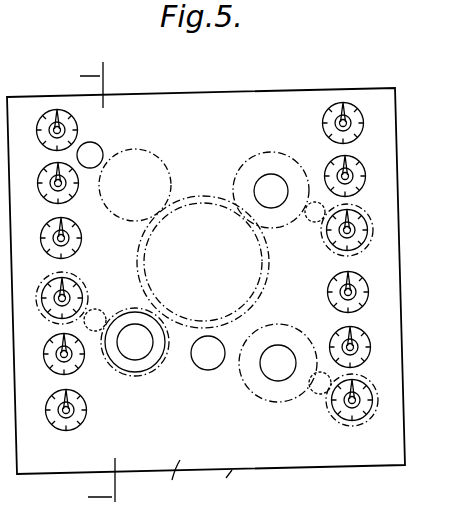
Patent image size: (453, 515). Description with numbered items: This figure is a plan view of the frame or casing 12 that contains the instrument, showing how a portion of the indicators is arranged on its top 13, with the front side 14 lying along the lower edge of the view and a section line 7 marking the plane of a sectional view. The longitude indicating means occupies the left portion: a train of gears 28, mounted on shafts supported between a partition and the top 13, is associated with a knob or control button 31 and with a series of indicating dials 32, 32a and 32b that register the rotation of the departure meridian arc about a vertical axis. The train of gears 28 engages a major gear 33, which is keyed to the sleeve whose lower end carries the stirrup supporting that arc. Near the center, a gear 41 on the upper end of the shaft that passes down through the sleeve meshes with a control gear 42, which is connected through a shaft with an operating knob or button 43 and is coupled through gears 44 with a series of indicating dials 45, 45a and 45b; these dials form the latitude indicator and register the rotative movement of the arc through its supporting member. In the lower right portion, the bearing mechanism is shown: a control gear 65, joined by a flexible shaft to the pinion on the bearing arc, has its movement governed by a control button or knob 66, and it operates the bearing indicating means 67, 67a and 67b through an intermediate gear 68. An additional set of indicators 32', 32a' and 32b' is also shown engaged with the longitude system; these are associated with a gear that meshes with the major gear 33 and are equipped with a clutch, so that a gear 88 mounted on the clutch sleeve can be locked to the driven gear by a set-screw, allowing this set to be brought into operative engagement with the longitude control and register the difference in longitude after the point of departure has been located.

The section line 7 is at (87, 284).
The frame or casing 12 is at (3, 80).
The top 13 is at (169, 477).
The front side 14 is at (220, 482).
The train of gears 28 is at (103, 150).
The knob or control button 31 is at (207, 357).
The indicating dial 32 is at (47, 140).
The indicating dial 32a is at (48, 194).
The indicating dial 32b is at (50, 249).
The indicator 32' is at (53, 305).
The indicator 32a' is at (52, 365).
The indicator 32b' is at (54, 421).
The major gear 33 is at (268, 272).
The gear 41 is at (199, 198).
The control gear 42 is at (279, 156).
The operating knob or button 43 is at (271, 191).
The gears 44 is at (312, 222).
The indicating dial 45 is at (362, 217).
The indicating dial 45a is at (360, 171).
The indicating dial 45b is at (326, 110).
The control gear 65 is at (259, 396).
The control button or knob 66 is at (283, 356).
The bearing indicating means 67 is at (362, 420).
The bearing indicating means 67a is at (362, 358).
The bearing indicating means 67b is at (360, 304).
The intermediate gear 68 is at (316, 394).
The gear 88 is at (148, 377).